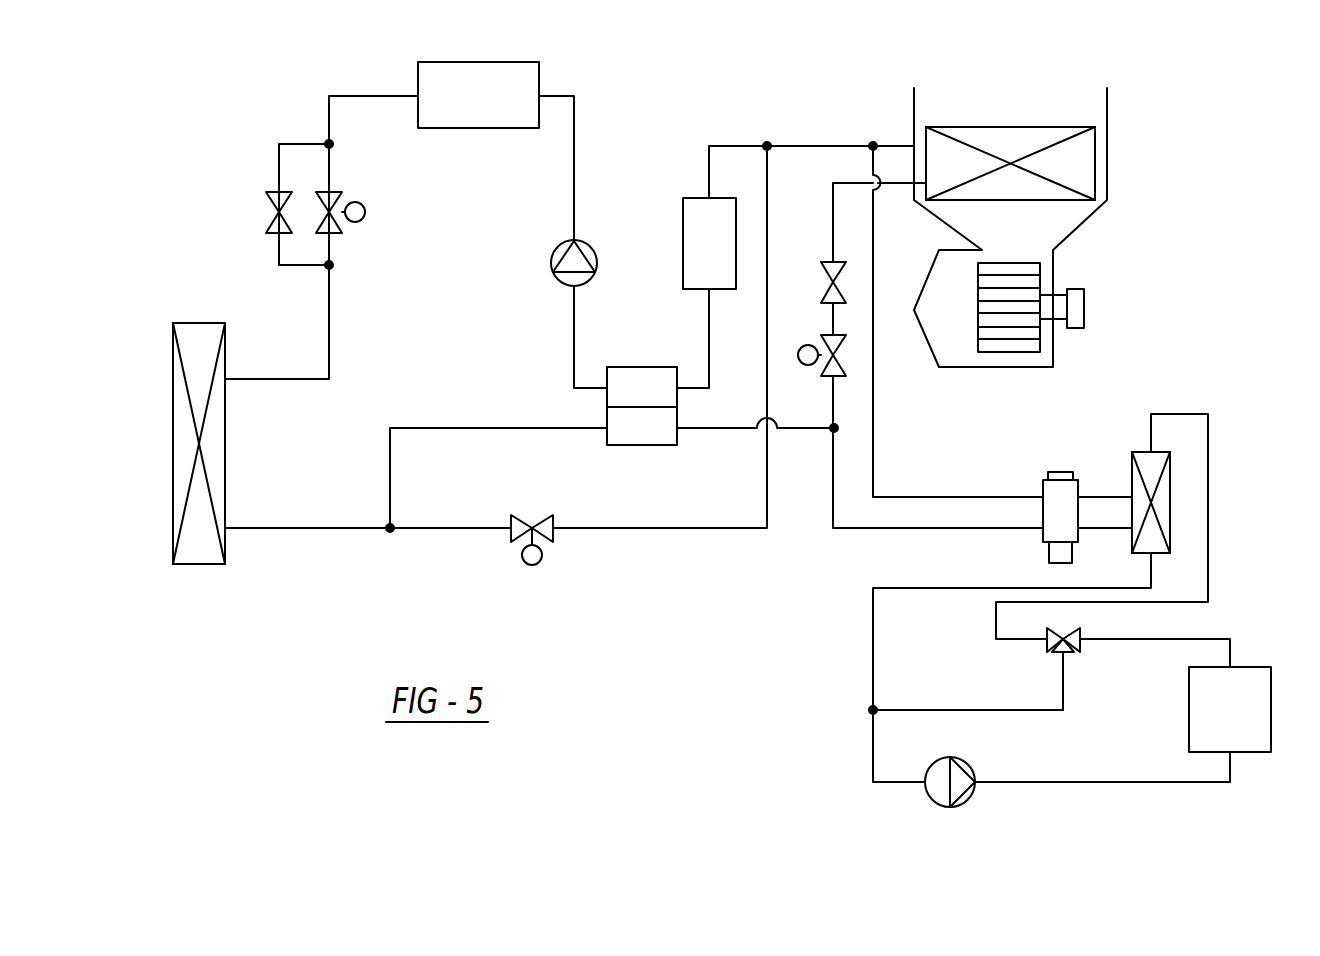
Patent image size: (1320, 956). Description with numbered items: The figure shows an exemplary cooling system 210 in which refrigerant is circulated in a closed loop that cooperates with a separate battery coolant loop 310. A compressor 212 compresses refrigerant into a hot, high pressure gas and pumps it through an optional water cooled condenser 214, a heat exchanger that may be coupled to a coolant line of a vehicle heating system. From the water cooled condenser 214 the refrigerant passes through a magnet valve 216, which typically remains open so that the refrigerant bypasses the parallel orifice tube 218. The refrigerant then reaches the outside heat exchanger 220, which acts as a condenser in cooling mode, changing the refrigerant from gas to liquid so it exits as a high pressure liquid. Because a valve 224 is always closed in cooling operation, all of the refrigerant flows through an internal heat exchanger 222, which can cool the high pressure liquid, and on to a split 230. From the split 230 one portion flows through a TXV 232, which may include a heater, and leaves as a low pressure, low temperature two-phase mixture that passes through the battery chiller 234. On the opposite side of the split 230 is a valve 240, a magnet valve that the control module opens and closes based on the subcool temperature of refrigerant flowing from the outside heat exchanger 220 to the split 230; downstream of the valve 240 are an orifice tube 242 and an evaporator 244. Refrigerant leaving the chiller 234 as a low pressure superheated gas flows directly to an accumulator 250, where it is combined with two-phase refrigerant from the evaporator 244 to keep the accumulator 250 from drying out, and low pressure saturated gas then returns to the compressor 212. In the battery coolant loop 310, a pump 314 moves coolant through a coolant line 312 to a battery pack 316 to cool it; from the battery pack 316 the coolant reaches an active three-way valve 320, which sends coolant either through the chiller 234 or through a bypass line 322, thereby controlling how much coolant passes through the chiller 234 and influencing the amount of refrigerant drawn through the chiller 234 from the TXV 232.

The cooling system 210 is at (226, 127).
The compressor 212 is at (552, 260).
The water cooled condenser 214 is at (508, 128).
The magnet valve 216 is at (362, 222).
The orifice tube 218 is at (266, 200).
The outside heat exchanger 220 is at (225, 425).
The internal heat exchanger 222 is at (628, 445).
The valve 224 is at (532, 566).
The split 230 is at (832, 434).
The TXV 232 is at (1043, 487).
The battery chiller 234 is at (1135, 450).
The valve 240 is at (805, 364).
The orifice tube 242 is at (821, 272).
The evaporator 244 is at (1082, 158).
The accumulator 250 is at (683, 215).
The battery coolant loop 310 is at (838, 690).
The coolant line 312 is at (1097, 785).
The pump 314 is at (932, 806).
The battery pack 316 is at (1256, 667).
The three-way valve 320 is at (1068, 656).
The bypass line 322 is at (962, 710).